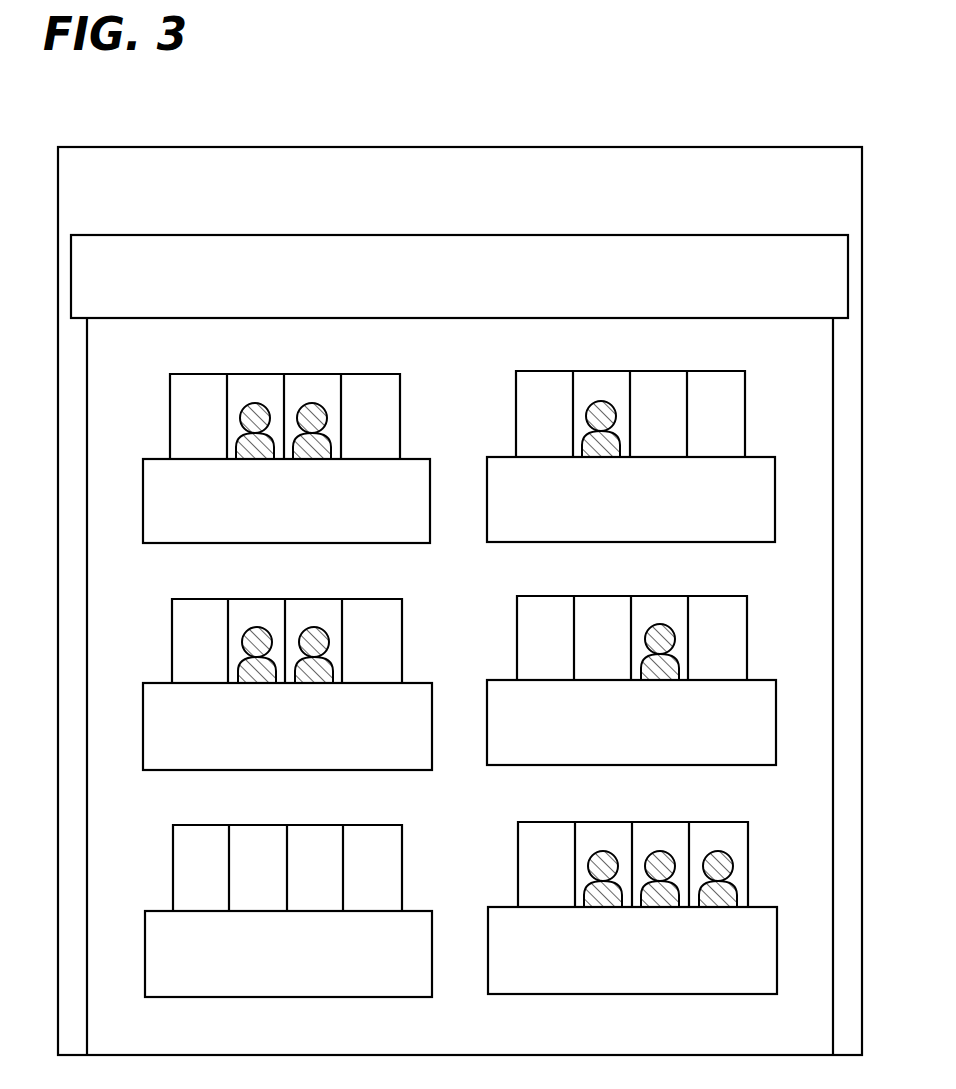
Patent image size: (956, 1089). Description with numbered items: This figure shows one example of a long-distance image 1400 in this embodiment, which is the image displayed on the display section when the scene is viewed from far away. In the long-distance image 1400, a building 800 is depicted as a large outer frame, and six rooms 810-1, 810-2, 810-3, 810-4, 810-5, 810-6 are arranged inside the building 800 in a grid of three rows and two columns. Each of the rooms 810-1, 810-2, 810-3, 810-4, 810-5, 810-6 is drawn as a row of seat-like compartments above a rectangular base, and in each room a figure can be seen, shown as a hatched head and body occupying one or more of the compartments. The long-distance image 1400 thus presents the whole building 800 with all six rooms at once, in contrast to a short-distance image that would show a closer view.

The long-distance image 1400 is at (748, 146).
The building 800 is at (713, 232).
The room 810-1 is at (325, 373).
The room 810-2 is at (673, 370).
The room 810-3 is at (327, 598).
The room 810-4 is at (673, 595).
The room 810-5 is at (328, 824).
The room 810-6 is at (676, 821).